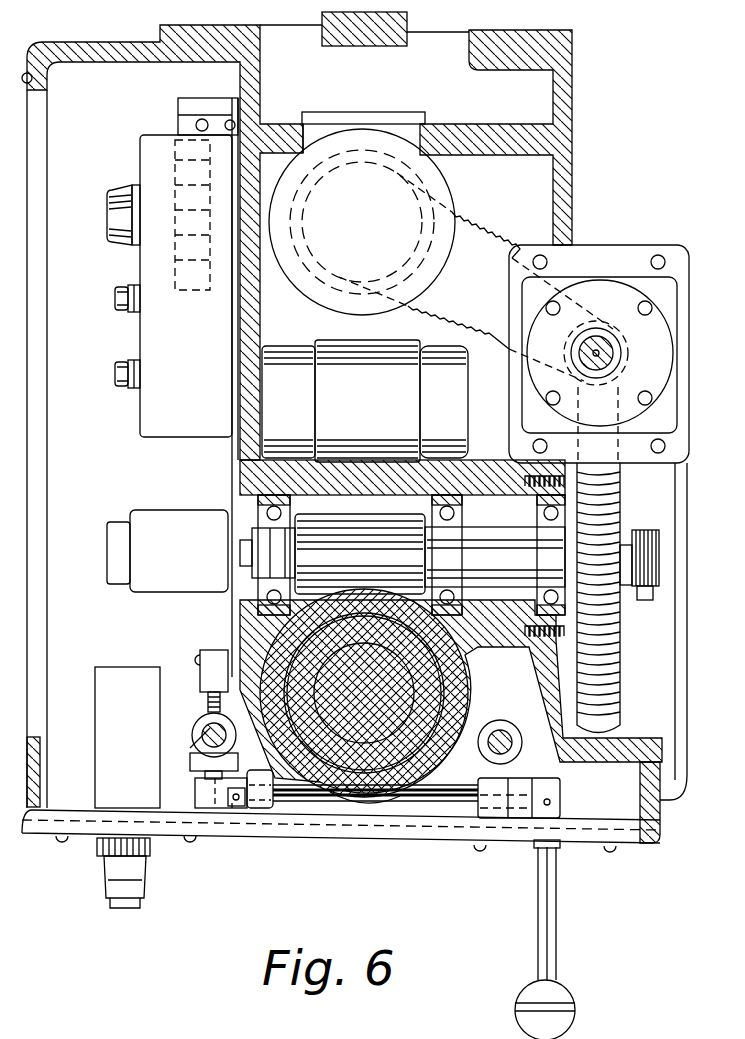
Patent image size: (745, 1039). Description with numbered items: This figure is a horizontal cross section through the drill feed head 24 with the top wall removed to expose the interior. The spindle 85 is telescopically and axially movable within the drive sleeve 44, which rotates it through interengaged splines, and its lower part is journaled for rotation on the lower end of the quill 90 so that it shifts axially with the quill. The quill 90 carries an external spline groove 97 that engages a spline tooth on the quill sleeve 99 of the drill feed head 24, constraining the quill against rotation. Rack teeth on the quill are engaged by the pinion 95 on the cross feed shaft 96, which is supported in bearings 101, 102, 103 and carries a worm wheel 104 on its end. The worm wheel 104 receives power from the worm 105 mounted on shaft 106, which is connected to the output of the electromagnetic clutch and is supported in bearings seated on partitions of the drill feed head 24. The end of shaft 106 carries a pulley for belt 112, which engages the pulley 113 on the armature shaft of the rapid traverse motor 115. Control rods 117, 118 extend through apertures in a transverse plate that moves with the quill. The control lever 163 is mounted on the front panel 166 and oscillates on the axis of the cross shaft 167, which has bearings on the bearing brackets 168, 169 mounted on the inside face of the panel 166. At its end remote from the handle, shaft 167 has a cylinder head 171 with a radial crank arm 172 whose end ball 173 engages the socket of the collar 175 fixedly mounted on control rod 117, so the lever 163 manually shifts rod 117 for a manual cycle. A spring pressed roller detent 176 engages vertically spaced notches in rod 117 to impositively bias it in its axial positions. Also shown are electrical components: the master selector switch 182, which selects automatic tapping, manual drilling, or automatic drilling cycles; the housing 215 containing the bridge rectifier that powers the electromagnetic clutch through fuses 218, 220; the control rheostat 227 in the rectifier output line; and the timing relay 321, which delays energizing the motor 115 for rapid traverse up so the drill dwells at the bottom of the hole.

The drill feed head 24 is at (566, 207).
The drive sleeve 44 is at (410, 688).
The spindle 85 is at (432, 672).
The quill 90 is at (440, 702).
The pinion 95 is at (370, 530).
The cross feed shaft 96 is at (490, 528).
The spline groove 97 is at (415, 771).
The quill sleeve 99 is at (455, 736).
The bearing 101 is at (290, 517).
The bearing 102 is at (432, 511).
The bearing 103 is at (540, 519).
The worm wheel 104 is at (612, 684).
The worm 105 is at (626, 372).
The shaft 106 is at (616, 333).
The belt 112 is at (432, 245).
The pulley 113 is at (422, 262).
The rapid traverse motor 115 is at (430, 288).
The control rod 117 is at (204, 736).
The control rod 118 is at (506, 750).
The control lever 163 is at (558, 895).
The front panel 166 is at (345, 842).
The cross shaft 167 is at (352, 810).
The bearing bracket 168 is at (265, 763).
The bearing bracket 169 is at (506, 781).
The cylinder head 171 is at (232, 803).
The radial crank arm 172 is at (205, 800).
The end ball 173 is at (200, 790).
The collar 175 is at (196, 762).
The spring pressed roller detent 176 is at (208, 704).
The master selector switch 182 is at (140, 885).
The housing 215 is at (150, 413).
The fuse 218 is at (135, 362).
The fuse 220 is at (133, 312).
The control rheostat 227 is at (132, 238).
The timing relay 321 is at (143, 512).